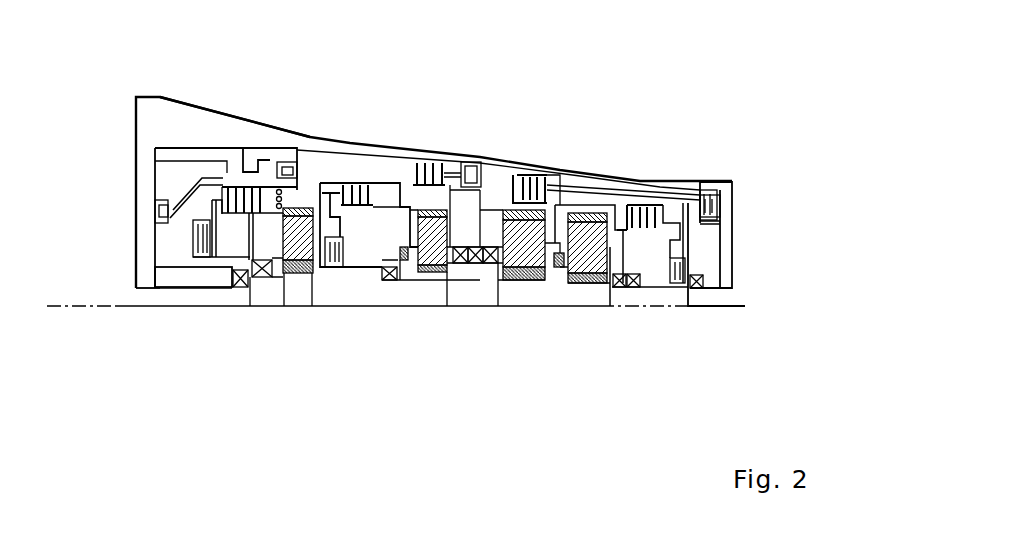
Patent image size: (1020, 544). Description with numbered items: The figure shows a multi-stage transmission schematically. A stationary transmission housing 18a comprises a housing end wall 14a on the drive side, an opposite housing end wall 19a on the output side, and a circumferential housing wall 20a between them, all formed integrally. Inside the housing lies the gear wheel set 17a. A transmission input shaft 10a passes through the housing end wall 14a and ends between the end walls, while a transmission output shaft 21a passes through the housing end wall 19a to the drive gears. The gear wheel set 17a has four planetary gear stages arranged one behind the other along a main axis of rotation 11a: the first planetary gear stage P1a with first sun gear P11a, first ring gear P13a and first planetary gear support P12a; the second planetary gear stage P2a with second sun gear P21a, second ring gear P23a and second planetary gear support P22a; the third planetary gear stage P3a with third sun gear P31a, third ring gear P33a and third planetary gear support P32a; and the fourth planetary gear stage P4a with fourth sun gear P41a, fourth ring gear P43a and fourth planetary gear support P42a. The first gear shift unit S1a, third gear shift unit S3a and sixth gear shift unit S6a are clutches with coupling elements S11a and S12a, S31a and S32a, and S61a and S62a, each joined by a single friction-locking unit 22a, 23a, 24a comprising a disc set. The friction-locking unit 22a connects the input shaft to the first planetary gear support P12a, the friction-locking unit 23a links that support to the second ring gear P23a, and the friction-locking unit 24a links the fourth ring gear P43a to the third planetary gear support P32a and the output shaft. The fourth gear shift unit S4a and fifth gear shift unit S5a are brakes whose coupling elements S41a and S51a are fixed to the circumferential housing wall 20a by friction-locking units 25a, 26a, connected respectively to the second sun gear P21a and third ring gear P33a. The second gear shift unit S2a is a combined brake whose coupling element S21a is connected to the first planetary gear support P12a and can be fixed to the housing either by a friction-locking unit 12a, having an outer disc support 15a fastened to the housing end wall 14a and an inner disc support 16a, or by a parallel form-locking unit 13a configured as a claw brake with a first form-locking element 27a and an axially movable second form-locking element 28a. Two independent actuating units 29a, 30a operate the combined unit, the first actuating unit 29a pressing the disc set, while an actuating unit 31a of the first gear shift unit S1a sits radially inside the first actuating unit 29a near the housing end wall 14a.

The housing end wall on the drive side 14a is at (142, 92).
The transmission housing 18a is at (172, 118).
The circumferential housing wall 20a is at (163, 127).
The housing end wall on the output side 19a is at (726, 176).
The transmission output shaft 21a is at (725, 310).
The main axis of rotation 11a is at (63, 310).
The transmission input shaft 10a is at (230, 308).
The friction-locking unit 12a is at (210, 168).
The first actuating unit 29a is at (150, 195).
The second gear shift unit S2a is at (142, 205).
The inner disc support 16a is at (160, 240).
The first gear shift unit S1a is at (163, 254).
The friction-locking unit 22a is at (184, 258).
The actuating unit 31a is at (150, 290).
The outer disc support 15a is at (263, 145).
The rotatable coupling element S21a is at (262, 185).
The second actuating unit 30a is at (282, 162).
The first form-locking element 27a is at (292, 170).
The second form-locking element 28a is at (305, 168).
The first rotatable coupling element S11a is at (224, 232).
The second rotatable coupling element S12a is at (265, 280).
The first planetary gear stage P1a is at (298, 312).
The first sun gear P11a is at (287, 292).
The first planetary gear support P12a is at (310, 290).
The first ring gear P13a is at (315, 212).
The third gear shift unit S3a is at (335, 280).
The first rotatable coupling element S31a is at (322, 272).
The second rotatable coupling element S32a is at (378, 280).
The form-locking unit 13a is at (380, 188).
The second sun gear P21a is at (435, 290).
The second planetary gear stage P2a is at (432, 310).
The second planetary gear support P22a is at (445, 300).
The second ring gear P23a is at (430, 205).
The friction-locking unit 23a is at (436, 155).
The friction-locking unit 25a is at (503, 188).
The third planetary gear support P32a is at (500, 280).
The third planetary gear stage P3a is at (523, 312).
The third sun gear P31a is at (537, 282).
The third ring gear P33a is at (600, 185).
The fourth gear shift unit S4a is at (503, 161).
The rotatable coupling element S41a is at (538, 166).
The fifth gear shift unit S5a is at (505, 188).
The friction-locking unit 26a is at (548, 170).
The fourth planetary gear stage P4a is at (596, 312).
The fourth sun gear P41a is at (573, 290).
The fourth planetary gear support P42a is at (607, 285).
The fourth ring gear P43a is at (668, 192).
The rotatable coupling element S51a is at (640, 185).
The friction-locking unit 24a is at (643, 246).
The sixth gear shift unit S6a is at (672, 296).
The first rotatable coupling element S61a is at (706, 281).
The second rotatable coupling element S62a is at (702, 206).
The gear wheel set 17a is at (700, 231).